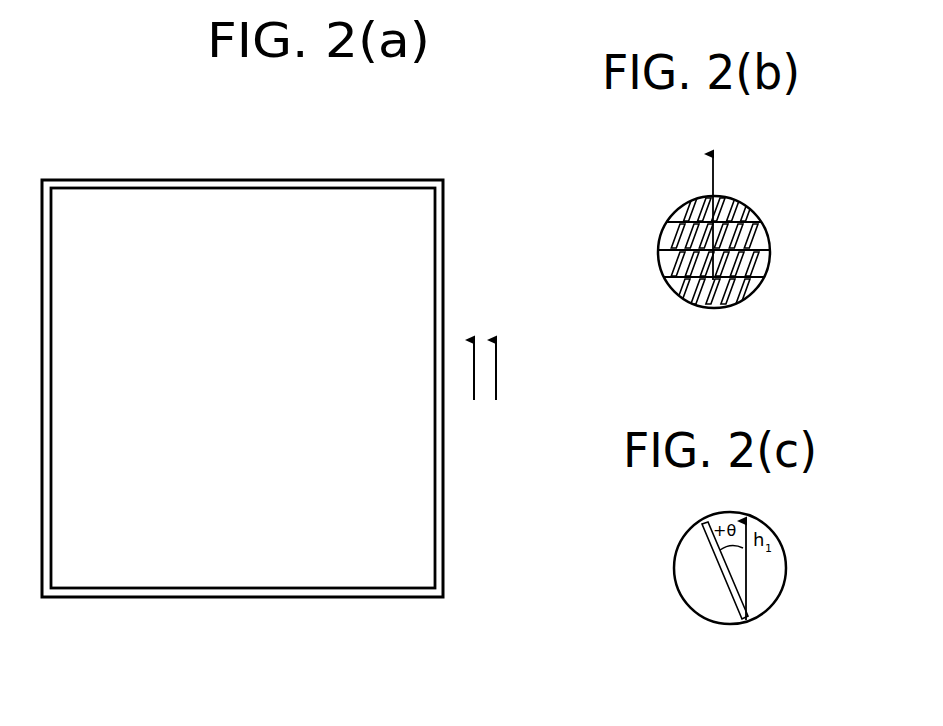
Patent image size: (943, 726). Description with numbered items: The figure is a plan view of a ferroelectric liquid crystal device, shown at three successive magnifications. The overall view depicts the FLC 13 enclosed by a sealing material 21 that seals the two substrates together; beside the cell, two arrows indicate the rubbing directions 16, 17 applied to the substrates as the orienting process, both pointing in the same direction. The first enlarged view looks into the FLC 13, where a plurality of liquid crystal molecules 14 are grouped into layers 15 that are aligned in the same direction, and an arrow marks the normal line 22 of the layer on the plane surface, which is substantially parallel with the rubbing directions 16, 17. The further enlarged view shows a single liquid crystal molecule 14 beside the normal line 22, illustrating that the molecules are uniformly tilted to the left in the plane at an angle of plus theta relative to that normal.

In FIG. 2A, the FLC 13 is at (186, 210).
In FIG. 2A, the sealing material 21 is at (372, 185).
In FIG. 2A, the rubbing 16 is at (474, 371).
In FIG. 2A, the rubbing 17 is at (496, 368).
In FIG. 2B, the normal line 22 is at (710, 180).
In FIG. 2C, the normal line 22 is at (785, 532).
In FIG. 2B, the liquid crystal molecule 14 is at (745, 206).
In FIG. 2C, the liquid crystal molecule 14 is at (712, 548).
In FIG. 2B, the layer 15 is at (760, 258).